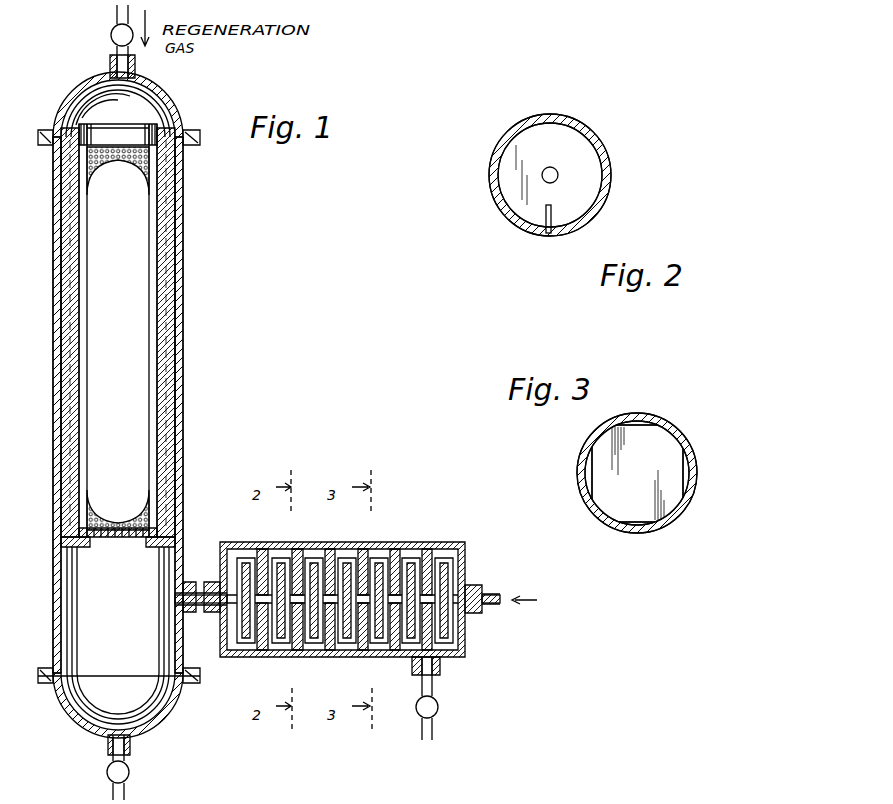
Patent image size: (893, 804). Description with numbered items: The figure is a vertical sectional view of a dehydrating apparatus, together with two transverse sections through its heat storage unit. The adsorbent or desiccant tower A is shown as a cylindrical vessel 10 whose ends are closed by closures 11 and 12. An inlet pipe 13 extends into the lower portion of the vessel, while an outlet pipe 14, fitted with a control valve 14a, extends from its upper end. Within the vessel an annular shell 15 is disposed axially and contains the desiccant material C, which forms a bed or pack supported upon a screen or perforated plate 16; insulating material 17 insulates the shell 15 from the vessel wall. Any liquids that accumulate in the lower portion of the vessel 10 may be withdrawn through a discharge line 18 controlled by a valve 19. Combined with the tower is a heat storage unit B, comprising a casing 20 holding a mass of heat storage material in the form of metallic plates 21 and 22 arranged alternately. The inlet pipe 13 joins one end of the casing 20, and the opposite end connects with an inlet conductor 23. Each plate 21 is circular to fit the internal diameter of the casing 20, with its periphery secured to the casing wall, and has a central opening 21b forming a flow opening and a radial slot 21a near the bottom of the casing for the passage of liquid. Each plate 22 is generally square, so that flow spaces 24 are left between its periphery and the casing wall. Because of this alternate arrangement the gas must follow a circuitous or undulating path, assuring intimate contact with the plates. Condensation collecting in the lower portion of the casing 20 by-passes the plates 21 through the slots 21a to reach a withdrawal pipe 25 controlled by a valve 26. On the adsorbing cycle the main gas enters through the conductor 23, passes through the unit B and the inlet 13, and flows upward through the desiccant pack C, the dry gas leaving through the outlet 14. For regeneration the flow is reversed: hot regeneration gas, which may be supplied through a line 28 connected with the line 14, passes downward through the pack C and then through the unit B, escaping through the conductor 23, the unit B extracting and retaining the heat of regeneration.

In FIG. 1, the cylindrical vessel 10 is at (183, 237).
In FIG. 1, the closure 11 is at (176, 97).
In FIG. 1, the closure 12 is at (78, 727).
In FIG. 1, the inlet pipe 13 is at (200, 582).
In FIG. 1, the outlet pipe 14 is at (110, 52).
In FIG. 1, the control valve 14a is at (111, 33).
In FIG. 1, the annular shell 15 is at (164, 286).
In FIG. 1, the screen or perforated plate 16 is at (111, 547).
In FIG. 1, the insulating material 17 is at (68, 402).
In FIG. 1, the discharge line 18 is at (128, 751).
In FIG. 1, the valve 19 is at (130, 774).
In FIG. 1, the casing 20 is at (430, 545).
In FIG. 2, the casing 20 is at (601, 202).
In FIG. 3, the casing 20 is at (692, 507).
In FIG. 1, the metallic plate 21 is at (258, 640).
In FIG. 2, the metallic plate 21 is at (586, 178).
In FIG. 2, the radial slot 21a is at (540, 226).
In FIG. 2, the central opening 21b is at (558, 170).
In FIG. 1, the metallic plate 22 is at (317, 634).
In FIG. 3, the metallic plate 22 is at (661, 445).
In FIG. 1, the inlet conductor 23 is at (490, 612).
In FIG. 3, the flow space 24 is at (685, 472).
In FIG. 1, the withdrawal pipe 25 is at (433, 686).
In FIG. 1, the valve 26 is at (438, 706).
In FIG. 1, the regeneration gas line 28 is at (215, 803).
In FIG. 1, the adsorbent or desiccant tower A is at (183, 192).
In FIG. 1, the heat storage unit B is at (406, 534).
In FIG. 1, the desiccant material C is at (127, 334).